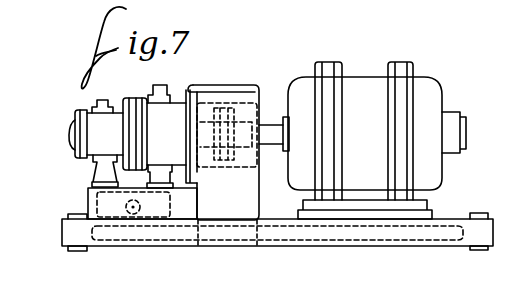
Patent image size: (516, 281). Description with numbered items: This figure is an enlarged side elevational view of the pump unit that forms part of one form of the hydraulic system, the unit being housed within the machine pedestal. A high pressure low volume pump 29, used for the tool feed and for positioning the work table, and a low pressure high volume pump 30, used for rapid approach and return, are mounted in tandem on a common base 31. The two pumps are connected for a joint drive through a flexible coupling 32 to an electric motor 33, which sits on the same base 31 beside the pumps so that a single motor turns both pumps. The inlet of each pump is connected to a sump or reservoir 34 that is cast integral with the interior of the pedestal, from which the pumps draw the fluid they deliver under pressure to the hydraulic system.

The high pressure low volume pump 29 is at (97, 140).
The low pressure high volume pump 30 is at (158, 113).
The base 31 is at (442, 218).
The flexible coupling 32 is at (229, 103).
The electric motor 33 is at (357, 85).
The sump or reservoir 34 is at (108, 203).